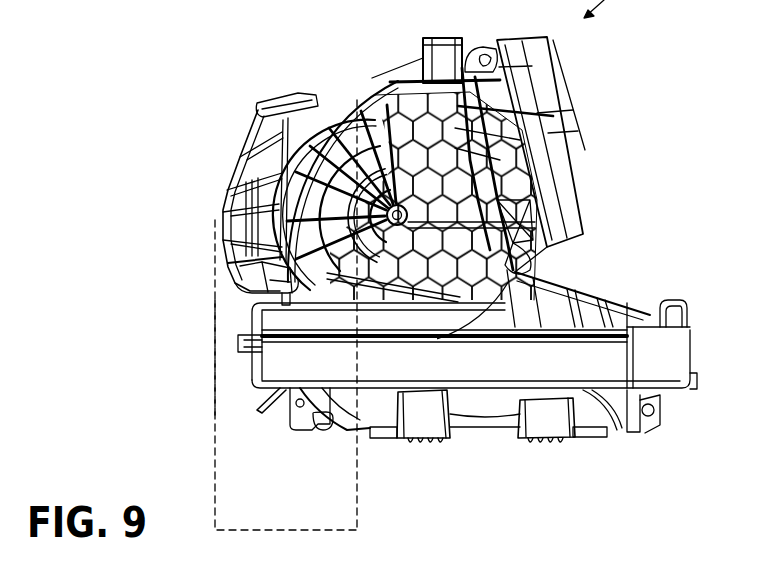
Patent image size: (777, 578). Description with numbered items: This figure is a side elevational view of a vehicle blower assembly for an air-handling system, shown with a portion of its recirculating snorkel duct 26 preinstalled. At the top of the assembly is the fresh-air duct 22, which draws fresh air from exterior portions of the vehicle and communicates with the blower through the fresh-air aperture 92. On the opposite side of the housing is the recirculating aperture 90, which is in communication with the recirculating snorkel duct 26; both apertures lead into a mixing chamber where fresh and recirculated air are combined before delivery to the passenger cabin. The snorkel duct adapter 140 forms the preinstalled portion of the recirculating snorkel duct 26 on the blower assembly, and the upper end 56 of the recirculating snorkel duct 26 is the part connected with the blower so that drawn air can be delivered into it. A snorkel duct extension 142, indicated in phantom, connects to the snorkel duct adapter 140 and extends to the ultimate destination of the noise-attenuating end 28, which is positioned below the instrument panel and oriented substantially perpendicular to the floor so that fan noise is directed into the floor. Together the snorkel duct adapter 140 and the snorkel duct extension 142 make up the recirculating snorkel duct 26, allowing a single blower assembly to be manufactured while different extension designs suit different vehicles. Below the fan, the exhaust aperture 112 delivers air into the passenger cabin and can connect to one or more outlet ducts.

The fresh-air duct 22 is at (542, 51).
The fresh-air aperture 92 is at (557, 153).
The upper end 56 is at (281, 98).
The snorkel duct adapter 140 is at (237, 164).
The recirculating aperture 90 is at (267, 253).
The recirculating snorkel duct 26 is at (215, 360).
The snorkel duct extension 142 is at (215, 413).
The noise-attenuating end 28 is at (337, 530).
The exhaust aperture 112 is at (483, 433).